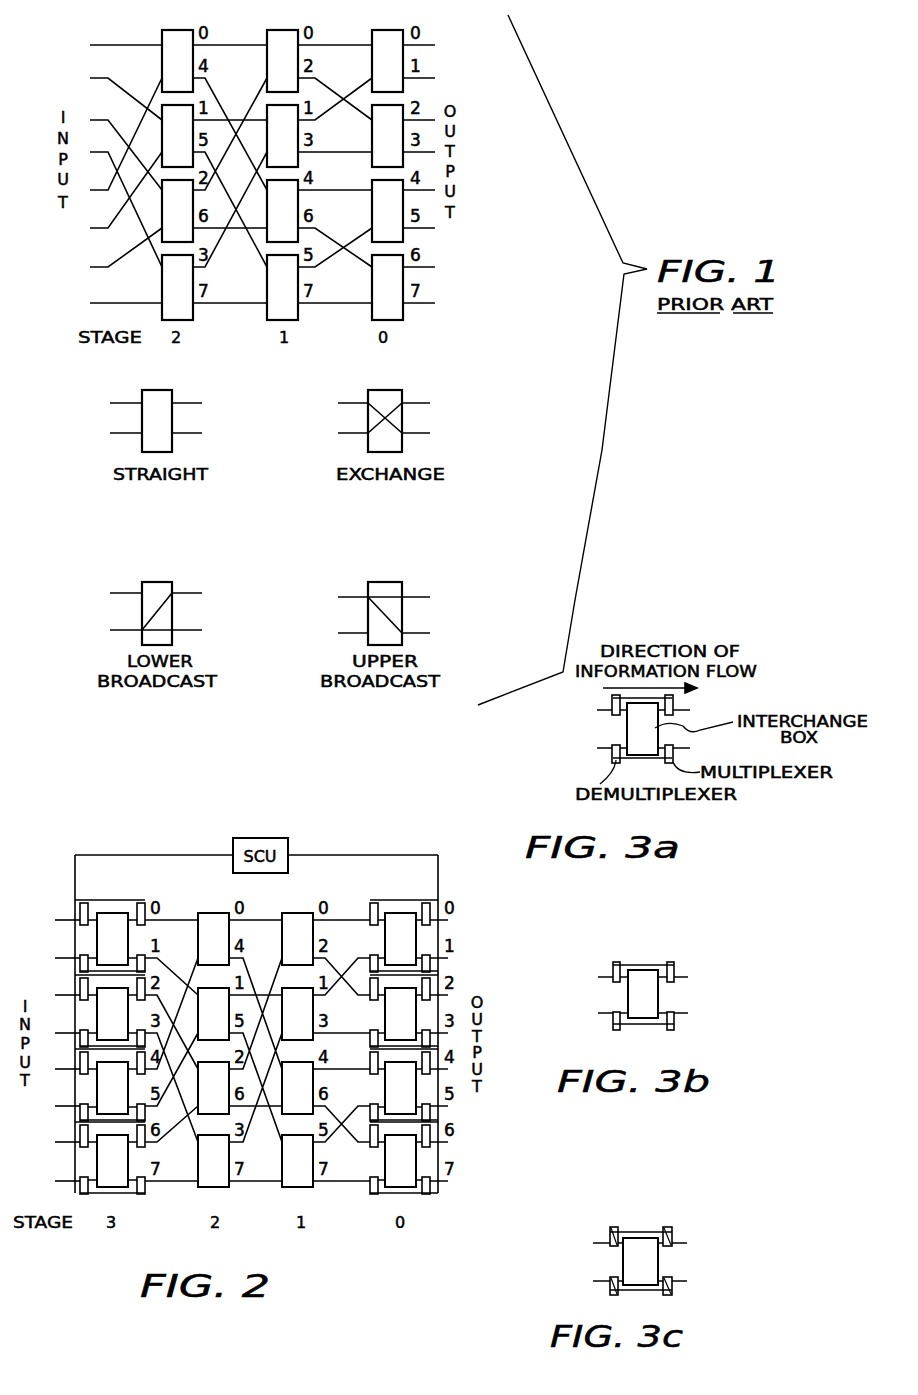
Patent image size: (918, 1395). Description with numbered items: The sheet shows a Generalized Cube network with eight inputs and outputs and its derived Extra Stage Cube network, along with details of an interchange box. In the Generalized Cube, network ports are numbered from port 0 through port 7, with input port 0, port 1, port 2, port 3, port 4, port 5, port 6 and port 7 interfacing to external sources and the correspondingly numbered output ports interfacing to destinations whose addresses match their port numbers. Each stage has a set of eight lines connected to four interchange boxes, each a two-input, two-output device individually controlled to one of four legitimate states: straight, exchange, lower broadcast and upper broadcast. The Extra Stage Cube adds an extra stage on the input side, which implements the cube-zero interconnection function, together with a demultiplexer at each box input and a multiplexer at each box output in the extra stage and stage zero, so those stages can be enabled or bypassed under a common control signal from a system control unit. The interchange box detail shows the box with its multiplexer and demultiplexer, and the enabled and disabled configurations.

In FIG. 1, the input/output port 0 is at (126, 34).
In FIG. 2, the input/output port 0 is at (67, 909).
In FIG. 1, the input/output port 1 is at (126, 88).
In FIG. 2, the input/output port 1 is at (67, 947).
In FIG. 1, the input/output port 2 is at (126, 144).
In FIG. 2, the input/output port 2 is at (67, 984).
In FIG. 1, the input/output port 3 is at (126, 198).
In FIG. 2, the input/output port 3 is at (67, 1022).
In FIG. 1, the input/output port 4 is at (126, 134).
In FIG. 2, the input/output port 4 is at (67, 1058).
In FIG. 1, the input/output port 5 is at (126, 190).
In FIG. 2, the input/output port 5 is at (67, 1095).
In FIG. 1, the input/output port 6 is at (126, 247).
In FIG. 2, the input/output port 6 is at (67, 1131).
In FIG. 1, the input/output port 7 is at (126, 292).
In FIG. 2, the input/output port 7 is at (67, 1170).